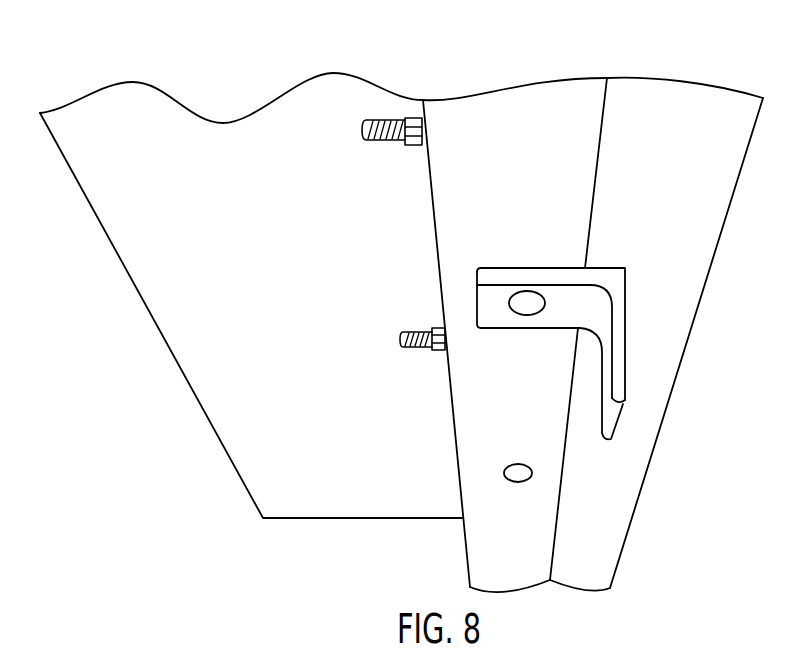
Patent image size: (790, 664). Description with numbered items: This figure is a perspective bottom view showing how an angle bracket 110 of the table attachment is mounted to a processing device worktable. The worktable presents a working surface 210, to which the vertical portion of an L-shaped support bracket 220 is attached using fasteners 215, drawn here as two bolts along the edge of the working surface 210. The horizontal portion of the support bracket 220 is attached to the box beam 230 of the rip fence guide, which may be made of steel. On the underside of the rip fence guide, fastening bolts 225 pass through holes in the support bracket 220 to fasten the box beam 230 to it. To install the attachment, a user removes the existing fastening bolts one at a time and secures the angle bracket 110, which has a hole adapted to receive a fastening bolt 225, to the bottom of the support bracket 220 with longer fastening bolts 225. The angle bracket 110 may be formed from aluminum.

The angle bracket 110 is at (607, 378).
The working surface 210 is at (271, 132).
The fasteners 215 is at (417, 147).
The support bracket 220 is at (498, 120).
The fastening bolts 225 is at (530, 303).
The box beam 230 is at (655, 102).